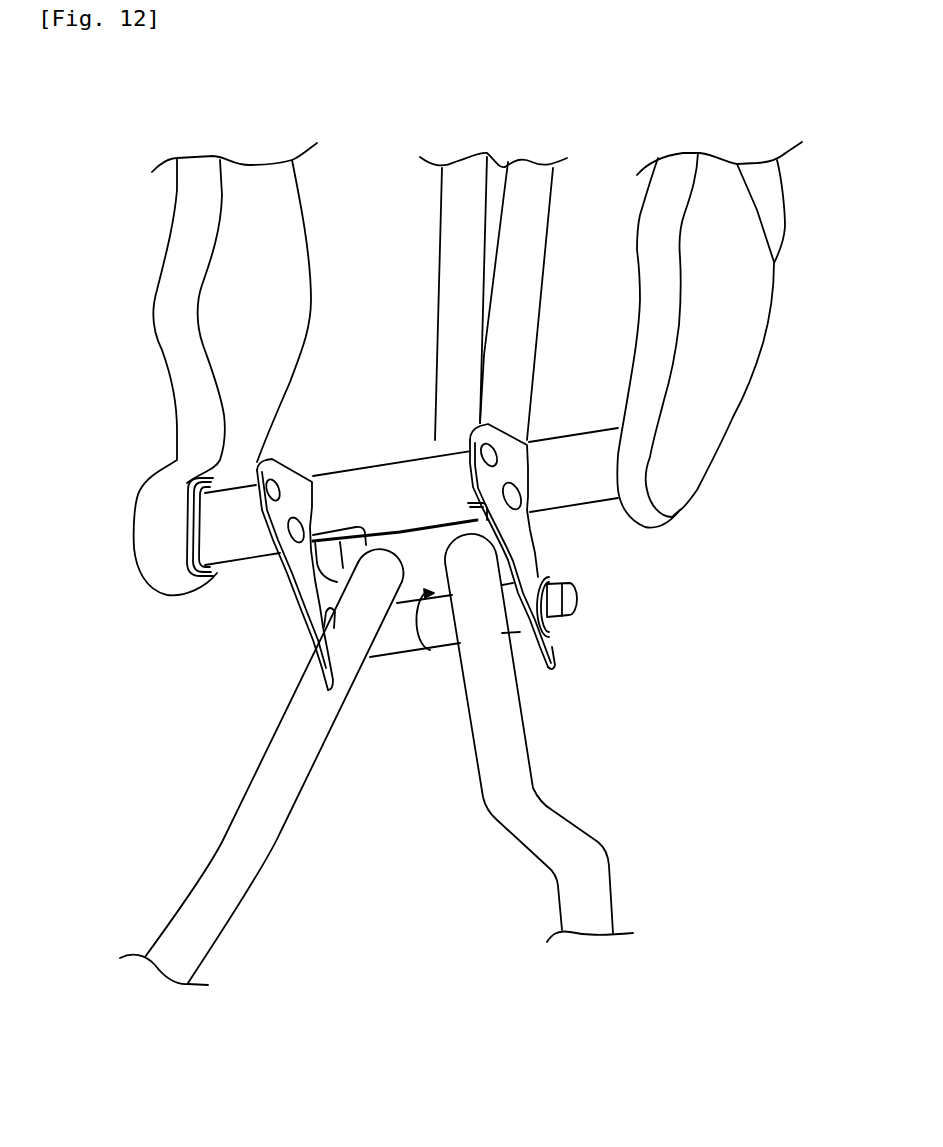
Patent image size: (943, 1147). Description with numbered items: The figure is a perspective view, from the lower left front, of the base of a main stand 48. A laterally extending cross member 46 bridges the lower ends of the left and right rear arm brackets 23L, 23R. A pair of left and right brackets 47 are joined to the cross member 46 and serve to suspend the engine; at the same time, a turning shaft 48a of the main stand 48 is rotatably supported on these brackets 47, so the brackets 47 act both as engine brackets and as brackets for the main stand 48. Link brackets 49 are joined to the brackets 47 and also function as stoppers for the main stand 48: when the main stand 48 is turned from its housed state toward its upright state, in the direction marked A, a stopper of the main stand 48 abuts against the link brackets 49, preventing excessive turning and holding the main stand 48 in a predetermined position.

The right rear arm bracket 23R is at (186, 384).
The left rear arm bracket 23L is at (743, 327).
The cross member 46 is at (383, 478).
The brackets 47 is at (293, 587).
The main stand 48 is at (413, 546).
The turning shaft 48a is at (410, 640).
The link brackets 49 is at (322, 530).